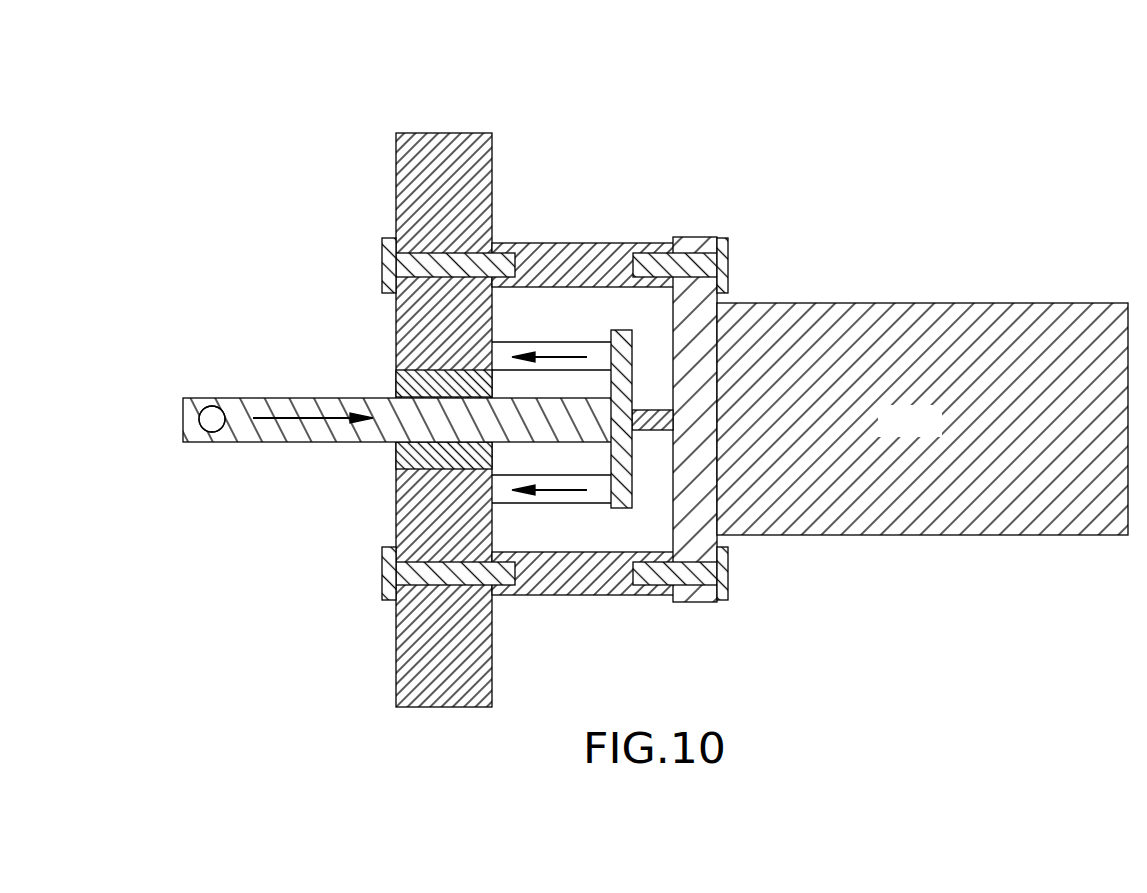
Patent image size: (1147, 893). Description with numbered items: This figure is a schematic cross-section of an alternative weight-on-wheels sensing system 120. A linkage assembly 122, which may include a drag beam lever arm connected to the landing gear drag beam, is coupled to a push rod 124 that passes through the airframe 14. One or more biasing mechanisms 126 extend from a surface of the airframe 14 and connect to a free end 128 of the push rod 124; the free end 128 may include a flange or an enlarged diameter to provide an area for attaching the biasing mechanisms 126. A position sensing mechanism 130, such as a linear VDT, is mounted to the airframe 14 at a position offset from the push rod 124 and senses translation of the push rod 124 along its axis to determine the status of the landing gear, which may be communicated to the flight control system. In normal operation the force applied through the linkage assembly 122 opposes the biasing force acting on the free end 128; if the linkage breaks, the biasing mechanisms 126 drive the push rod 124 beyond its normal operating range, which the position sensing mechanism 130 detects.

The airframe 14 is at (447, 150).
The WOW sensing system 120 is at (1023, 137).
The linkage assembly 122 is at (262, 328).
The push rod 124 is at (303, 420).
The biasing mechanism 126 is at (562, 357).
The free end 128 is at (625, 485).
The position sensing mechanism 130 is at (971, 310).